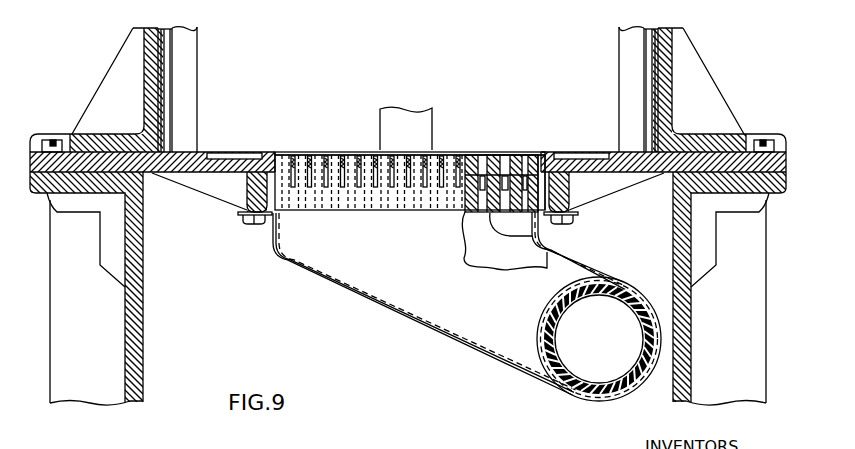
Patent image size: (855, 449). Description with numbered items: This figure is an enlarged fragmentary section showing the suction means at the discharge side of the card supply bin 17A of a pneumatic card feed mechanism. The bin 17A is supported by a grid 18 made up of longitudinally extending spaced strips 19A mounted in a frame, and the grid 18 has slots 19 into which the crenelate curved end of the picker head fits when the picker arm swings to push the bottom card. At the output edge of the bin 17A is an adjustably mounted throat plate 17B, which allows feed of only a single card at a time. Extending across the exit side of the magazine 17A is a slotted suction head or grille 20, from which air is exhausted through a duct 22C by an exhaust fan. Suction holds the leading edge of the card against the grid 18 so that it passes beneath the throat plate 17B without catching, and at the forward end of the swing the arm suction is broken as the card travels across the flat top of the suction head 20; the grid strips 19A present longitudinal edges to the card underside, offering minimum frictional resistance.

The card supply bin 17A is at (188, 62).
The throat plate 17B is at (423, 130).
The grid 18 is at (378, 153).
The slots of the grid 19 is at (334, 154).
The grid strips 19A is at (376, 154).
The slotted suction head 20 is at (548, 238).
The duct 22C is at (581, 393).